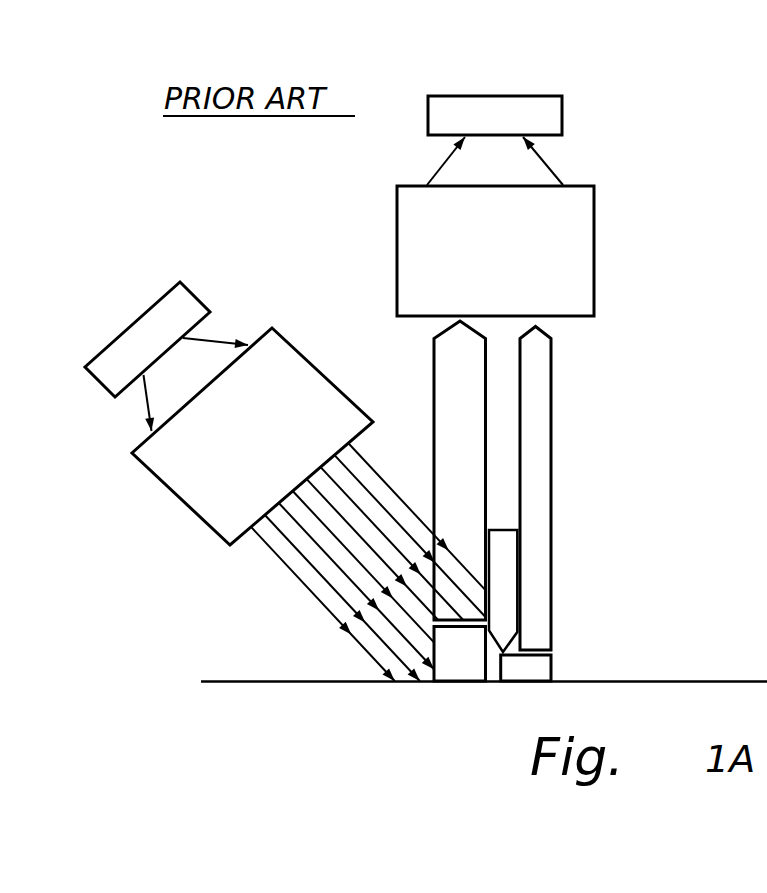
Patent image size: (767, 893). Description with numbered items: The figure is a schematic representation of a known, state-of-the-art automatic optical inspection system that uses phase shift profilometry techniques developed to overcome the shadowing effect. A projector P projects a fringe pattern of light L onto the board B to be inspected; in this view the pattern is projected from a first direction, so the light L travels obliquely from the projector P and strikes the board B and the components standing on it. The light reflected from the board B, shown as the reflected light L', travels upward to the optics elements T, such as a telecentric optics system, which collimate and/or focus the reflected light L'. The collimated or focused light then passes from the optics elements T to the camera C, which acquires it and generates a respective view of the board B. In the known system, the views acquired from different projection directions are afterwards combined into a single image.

The camera C is at (495, 118).
The optics elements T is at (442, 253).
The projector P is at (155, 328).
The fringe pattern of light L is at (368, 562).
The reflected light L' is at (528, 501).
The board B is at (458, 696).